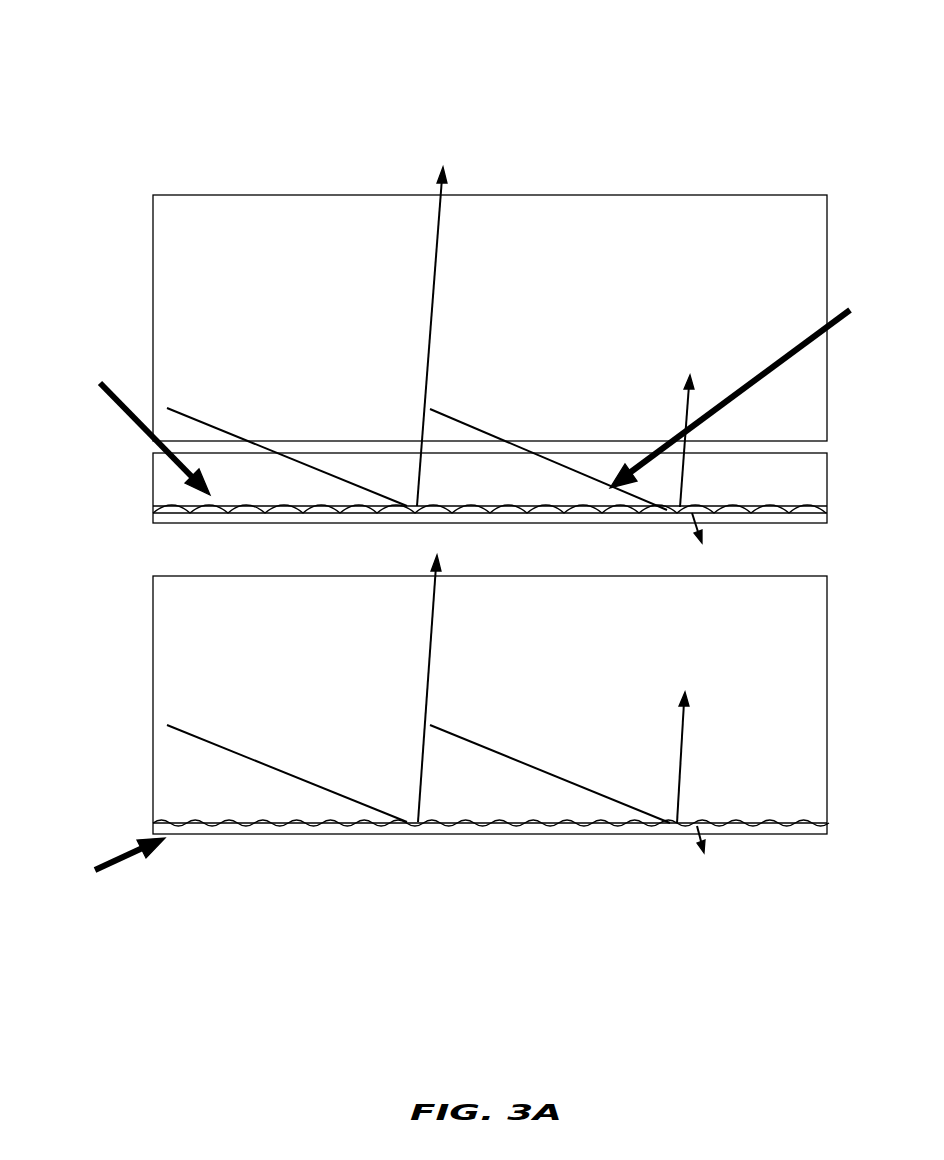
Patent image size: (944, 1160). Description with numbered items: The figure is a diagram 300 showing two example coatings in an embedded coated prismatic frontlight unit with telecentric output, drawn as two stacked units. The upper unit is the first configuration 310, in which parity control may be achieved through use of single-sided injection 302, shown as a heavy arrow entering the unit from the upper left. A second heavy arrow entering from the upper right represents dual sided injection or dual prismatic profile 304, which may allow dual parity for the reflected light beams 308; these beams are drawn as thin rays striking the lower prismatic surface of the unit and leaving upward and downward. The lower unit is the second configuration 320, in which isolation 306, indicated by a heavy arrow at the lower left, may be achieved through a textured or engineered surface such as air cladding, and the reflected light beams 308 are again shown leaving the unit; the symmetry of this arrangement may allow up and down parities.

The diagram 300 is at (725, 60).
The single-sided injection 302 is at (135, 422).
The dual sided injection or dual prismatic profile 304 is at (751, 389).
The isolation 306 is at (103, 862).
The reflected light beams 308 is at (680, 402).
The first configuration 310 is at (163, 153).
The second configuration 320 is at (162, 565).